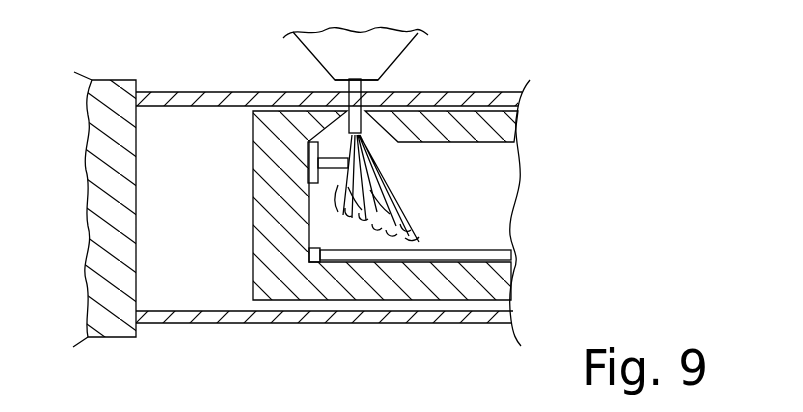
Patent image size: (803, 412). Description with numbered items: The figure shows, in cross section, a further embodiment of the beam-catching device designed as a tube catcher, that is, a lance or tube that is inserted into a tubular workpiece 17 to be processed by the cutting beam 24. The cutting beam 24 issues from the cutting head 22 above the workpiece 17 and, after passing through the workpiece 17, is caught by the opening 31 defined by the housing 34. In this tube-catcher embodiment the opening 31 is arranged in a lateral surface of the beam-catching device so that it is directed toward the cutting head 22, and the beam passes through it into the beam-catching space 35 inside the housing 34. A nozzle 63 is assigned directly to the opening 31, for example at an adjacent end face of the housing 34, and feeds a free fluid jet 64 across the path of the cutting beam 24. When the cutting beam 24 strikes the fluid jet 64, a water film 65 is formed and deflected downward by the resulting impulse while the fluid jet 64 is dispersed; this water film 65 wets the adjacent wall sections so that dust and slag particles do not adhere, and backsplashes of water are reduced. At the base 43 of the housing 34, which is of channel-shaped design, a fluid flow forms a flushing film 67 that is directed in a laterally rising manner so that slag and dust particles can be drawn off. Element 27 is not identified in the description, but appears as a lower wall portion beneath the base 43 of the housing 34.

The workpiece 17 is at (175, 101).
The cutting head 22 is at (385, 46).
The cutting beam 24 is at (385, 82).
The bottom plate 27 is at (522, 283).
The opening 31 is at (283, 94).
The housing 34 is at (487, 128).
The beam-catching space 35 is at (493, 165).
The base 43 is at (420, 263).
The nozzle 63 is at (309, 153).
The fluid jet 64 is at (325, 168).
The water film 65 is at (377, 184).
The flushing film 67 is at (365, 256).